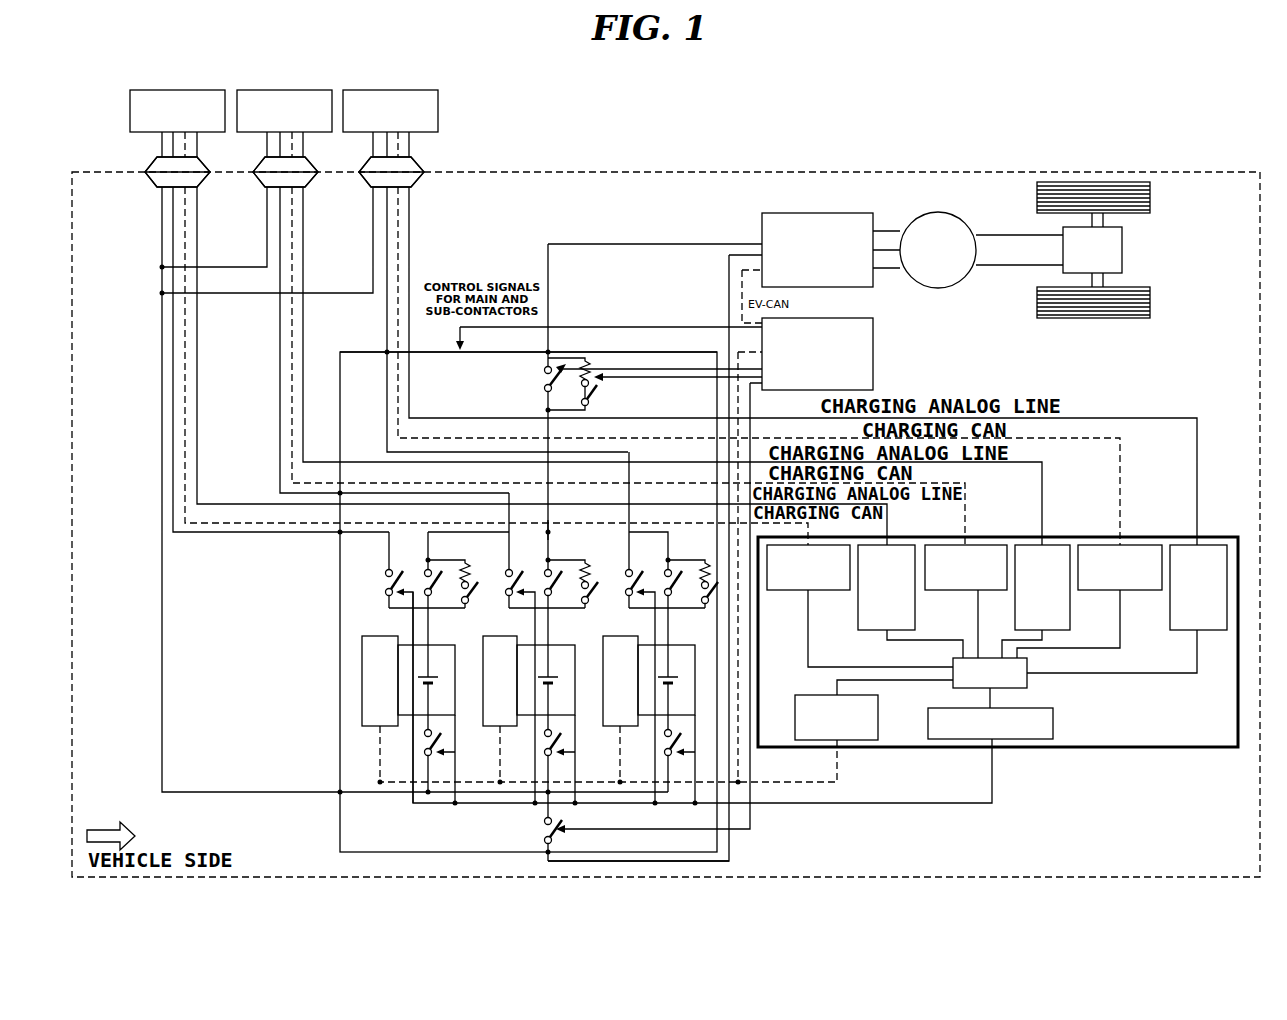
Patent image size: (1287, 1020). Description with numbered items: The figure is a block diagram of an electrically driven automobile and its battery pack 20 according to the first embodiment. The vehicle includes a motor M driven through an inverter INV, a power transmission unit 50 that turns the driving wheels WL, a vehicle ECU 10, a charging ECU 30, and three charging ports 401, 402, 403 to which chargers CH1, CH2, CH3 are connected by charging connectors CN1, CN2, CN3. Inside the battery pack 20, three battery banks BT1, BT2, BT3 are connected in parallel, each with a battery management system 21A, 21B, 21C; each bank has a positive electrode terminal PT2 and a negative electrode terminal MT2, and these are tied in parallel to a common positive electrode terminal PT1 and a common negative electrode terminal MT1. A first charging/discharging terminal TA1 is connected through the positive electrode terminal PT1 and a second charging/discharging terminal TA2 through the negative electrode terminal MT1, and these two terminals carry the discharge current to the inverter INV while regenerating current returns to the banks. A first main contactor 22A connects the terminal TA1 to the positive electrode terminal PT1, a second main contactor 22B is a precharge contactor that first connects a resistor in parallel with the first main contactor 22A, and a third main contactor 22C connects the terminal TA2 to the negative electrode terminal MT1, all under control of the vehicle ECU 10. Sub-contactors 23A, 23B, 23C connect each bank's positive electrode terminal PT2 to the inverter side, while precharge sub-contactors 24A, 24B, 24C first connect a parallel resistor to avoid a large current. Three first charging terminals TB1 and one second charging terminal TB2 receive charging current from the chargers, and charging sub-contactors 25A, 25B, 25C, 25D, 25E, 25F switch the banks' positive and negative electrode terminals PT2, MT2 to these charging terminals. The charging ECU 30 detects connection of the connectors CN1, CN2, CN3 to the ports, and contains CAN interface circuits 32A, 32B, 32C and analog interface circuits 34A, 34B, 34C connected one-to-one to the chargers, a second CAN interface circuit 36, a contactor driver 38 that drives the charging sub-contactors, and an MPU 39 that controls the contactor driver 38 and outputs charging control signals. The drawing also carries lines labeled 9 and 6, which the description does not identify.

The charging port 401 is at (197, 181).
The charging port 402 is at (302, 181).
The charging port 403 is at (410, 181).
The charger CH1 is at (130, 112).
The charger CH2 is at (321, 132).
The charger CH3 is at (438, 112).
The charging connector CN1 is at (154, 160).
The charging connector CN2 is at (259, 160).
The charging connector CN3 is at (421, 161).
The control signal line 9 is at (673, 327).
The vehicle ECU 10 is at (873, 352).
The inverter INV is at (818, 212).
The motor M is at (949, 213).
The power transmission unit 50 is at (1122, 249).
The driving wheels WL is at (1150, 194).
The battery pack 20 is at (333, 588).
The first charging terminal TB1 is at (387, 352).
The second charging terminal TB2 is at (340, 792).
The first charging/discharging terminal TA1 is at (543, 370).
The second charging/discharging terminal TA2 is at (547, 861).
The first main contactor 22A is at (544, 376).
The second main contactor 22B is at (598, 391).
The third main contactor 22C is at (558, 829).
The positive electrode terminal PT1 is at (548, 530).
The positive electrode terminal PT2 is at (413, 640).
The negative electrode terminal MT1 is at (545, 821).
The negative electrode terminal MT2 is at (423, 732).
The sub-contactor 23A is at (425, 570).
The sub-contactor 23B is at (545, 570).
The sub-contactor 23C is at (665, 570).
The precharge sub-contactor 24A is at (463, 570).
The precharge sub-contactor 24B is at (583, 570).
The precharge sub-contactor 24C is at (703, 570).
The charging sub-contactor 25A is at (386, 570).
The charging sub-contactor 25B is at (424, 745).
The charging sub-contactor 25C is at (506, 570).
The charging sub-contactor 25D is at (544, 745).
The charging sub-contactor 25E is at (626, 570).
The charging sub-contactor 25F is at (666, 745).
The battery management system 21A is at (362, 686).
The battery management system 21B is at (482, 712).
The battery management system 21C is at (602, 712).
The battery bank BT1 is at (440, 645).
The battery bank BT2 is at (572, 630).
The battery bank BT3 is at (680, 645).
The charging ECU 30 is at (1071, 755).
The CAN interface circuit 32A is at (788, 592).
The CAN interface circuit 32B is at (948, 592).
The CAN interface circuit 32C is at (1098, 592).
The analog interface circuit 34A is at (868, 630).
The analog interface circuit 34B is at (1058, 630).
The analog interface circuit 34C is at (1180, 630).
The CAN interface circuit 36 is at (878, 717).
The contactor driver 38 is at (1055, 723).
The micro processing unit 39 is at (1027, 682).
The power supply line 6 is at (875, 803).